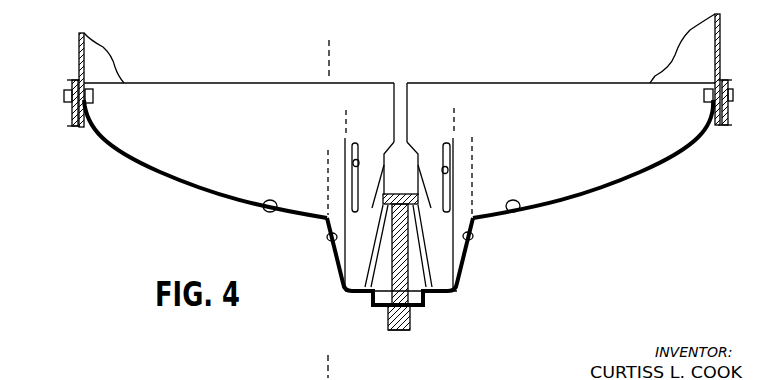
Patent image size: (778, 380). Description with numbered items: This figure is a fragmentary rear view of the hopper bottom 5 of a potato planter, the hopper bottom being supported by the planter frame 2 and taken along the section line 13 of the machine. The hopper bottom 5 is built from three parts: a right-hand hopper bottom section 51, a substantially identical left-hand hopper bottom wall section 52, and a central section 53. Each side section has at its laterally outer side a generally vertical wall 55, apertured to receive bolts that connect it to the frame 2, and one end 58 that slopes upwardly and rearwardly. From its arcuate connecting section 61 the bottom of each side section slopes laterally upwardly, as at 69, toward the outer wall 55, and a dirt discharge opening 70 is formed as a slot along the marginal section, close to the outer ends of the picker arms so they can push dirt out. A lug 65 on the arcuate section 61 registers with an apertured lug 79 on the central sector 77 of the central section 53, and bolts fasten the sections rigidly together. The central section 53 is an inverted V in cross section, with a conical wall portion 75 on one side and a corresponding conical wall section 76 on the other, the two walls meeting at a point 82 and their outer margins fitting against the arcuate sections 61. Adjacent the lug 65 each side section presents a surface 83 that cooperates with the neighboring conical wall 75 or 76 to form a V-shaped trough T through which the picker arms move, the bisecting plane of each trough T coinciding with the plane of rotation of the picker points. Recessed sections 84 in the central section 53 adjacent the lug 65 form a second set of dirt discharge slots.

The frame 2 is at (68, 91).
The hopper bottom 5 is at (508, 66).
The section line 13 is at (329, 40).
The hopper bottom section 51 is at (611, 191).
The hopper bottom wall section 52 is at (190, 201).
The central section of the hopper bottom wall 53 is at (362, 247).
The wall 55 is at (93, 123).
The end of hopper bottom section 58 is at (225, 103).
The arcuate connecting section 61 is at (351, 297).
The lug 65 is at (392, 316).
The laterally upwardly sloping bottom 69 is at (265, 211).
The dirt discharge opening 70 is at (358, 160).
The conical wall portion 75 is at (379, 208).
The conical wall section 76 is at (440, 238).
The central sector 77 is at (405, 249).
The apertured lug 79 is at (397, 331).
The point 82 is at (396, 140).
The cooperating surface 83 is at (330, 236).
The recessed section 84 is at (371, 293).
The trough T is at (352, 268).